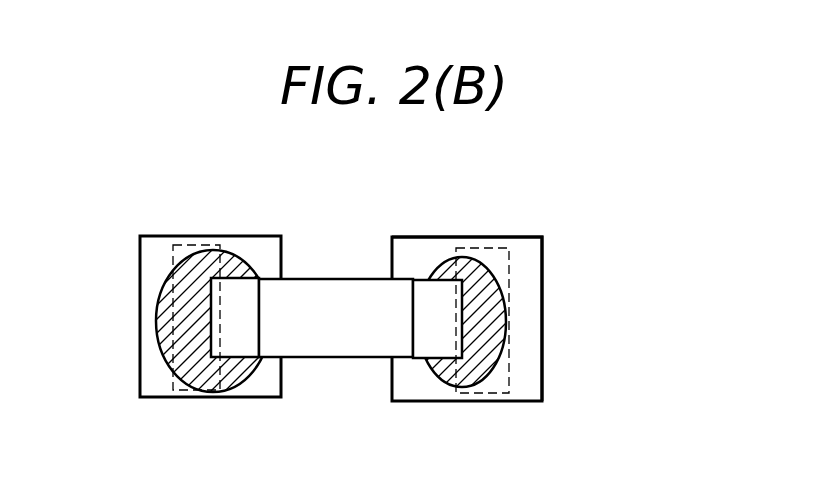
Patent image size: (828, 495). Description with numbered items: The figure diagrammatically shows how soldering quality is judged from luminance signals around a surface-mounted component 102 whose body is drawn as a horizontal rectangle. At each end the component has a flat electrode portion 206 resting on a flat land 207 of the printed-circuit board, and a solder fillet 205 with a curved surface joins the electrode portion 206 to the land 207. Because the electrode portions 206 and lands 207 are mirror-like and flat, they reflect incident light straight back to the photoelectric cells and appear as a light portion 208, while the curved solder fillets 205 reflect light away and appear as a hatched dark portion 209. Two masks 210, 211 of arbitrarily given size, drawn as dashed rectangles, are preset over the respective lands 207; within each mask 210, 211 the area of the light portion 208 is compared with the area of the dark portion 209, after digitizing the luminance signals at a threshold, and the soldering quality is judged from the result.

The semiconductor chip body 102 is at (325, 345).
The solder fillet 205 is at (397, 280).
The electrode portion 206 is at (247, 290).
The land 207 is at (417, 385).
The light portion 208 is at (437, 290).
The dark portion 209 is at (492, 292).
The mask 210 is at (509, 371).
The mask 211 is at (181, 392).